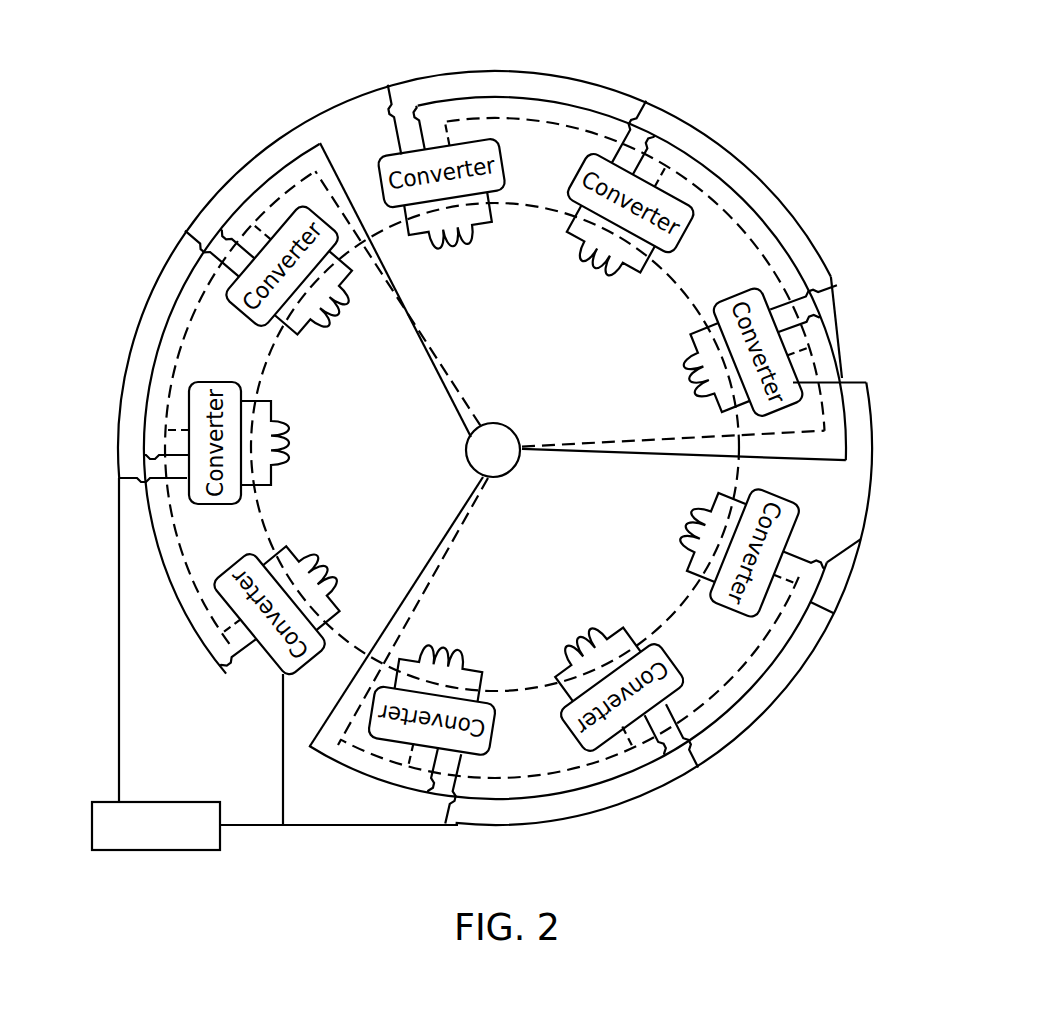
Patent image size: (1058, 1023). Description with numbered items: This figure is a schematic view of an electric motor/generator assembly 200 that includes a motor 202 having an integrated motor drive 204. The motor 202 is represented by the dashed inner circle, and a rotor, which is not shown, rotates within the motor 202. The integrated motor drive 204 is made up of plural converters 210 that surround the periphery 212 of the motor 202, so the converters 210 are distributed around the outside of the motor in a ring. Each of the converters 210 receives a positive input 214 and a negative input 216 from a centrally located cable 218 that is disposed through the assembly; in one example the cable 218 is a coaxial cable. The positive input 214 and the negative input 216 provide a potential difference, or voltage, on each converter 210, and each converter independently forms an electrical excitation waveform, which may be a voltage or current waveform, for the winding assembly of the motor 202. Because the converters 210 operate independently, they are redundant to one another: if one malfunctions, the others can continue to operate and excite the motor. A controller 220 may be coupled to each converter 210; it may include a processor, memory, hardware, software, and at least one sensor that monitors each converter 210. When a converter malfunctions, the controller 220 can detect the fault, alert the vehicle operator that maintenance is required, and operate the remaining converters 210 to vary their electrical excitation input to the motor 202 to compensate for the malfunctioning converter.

The electric motor/generator assembly 200 is at (504, 439).
The motor 202 is at (547, 448).
The integrated motor drive 204 is at (850, 285).
The converters 210 is at (487, 137).
The periphery 212 is at (557, 448).
The positive input 214 is at (412, 330).
The negative input 216 is at (405, 292).
The cable 218 is at (490, 424).
The controller 220 is at (97, 802).